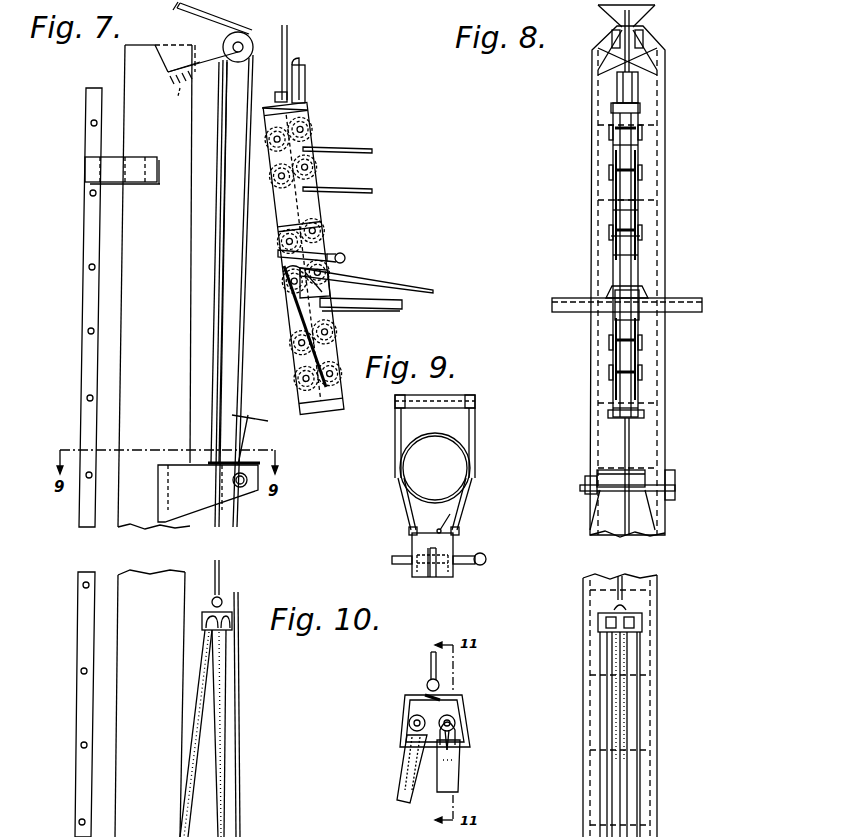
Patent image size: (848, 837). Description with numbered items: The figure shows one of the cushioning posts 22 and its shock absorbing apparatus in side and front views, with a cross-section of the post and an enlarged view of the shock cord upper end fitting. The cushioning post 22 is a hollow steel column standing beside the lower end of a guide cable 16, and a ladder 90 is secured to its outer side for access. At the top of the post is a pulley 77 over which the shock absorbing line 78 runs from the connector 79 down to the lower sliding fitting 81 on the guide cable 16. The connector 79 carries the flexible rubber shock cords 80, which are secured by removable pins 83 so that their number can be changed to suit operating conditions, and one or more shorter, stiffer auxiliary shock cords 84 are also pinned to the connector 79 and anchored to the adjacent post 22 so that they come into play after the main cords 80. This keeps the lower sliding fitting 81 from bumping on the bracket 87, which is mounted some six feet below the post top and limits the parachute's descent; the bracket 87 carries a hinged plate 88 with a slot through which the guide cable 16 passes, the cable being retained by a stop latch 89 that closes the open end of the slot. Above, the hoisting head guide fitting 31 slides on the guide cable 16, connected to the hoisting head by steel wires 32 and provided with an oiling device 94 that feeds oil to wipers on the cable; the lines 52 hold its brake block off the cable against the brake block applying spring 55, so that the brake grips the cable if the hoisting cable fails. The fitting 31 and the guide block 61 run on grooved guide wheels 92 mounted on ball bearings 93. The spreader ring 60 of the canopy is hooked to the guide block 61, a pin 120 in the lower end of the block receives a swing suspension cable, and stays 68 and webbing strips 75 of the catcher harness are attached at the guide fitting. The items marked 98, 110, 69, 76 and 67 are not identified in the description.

In FIG. 7, the cushioning post 22 is at (130, 277).
In FIG. 8, the cushioning post 22 is at (593, 220).
In FIG. 7, the pulley 77 is at (223, 32).
In FIG. 8, the pulley 77 is at (640, 42).
In FIG. 7, the guide strip 98 is at (222, 130).
In FIG. 7, the guide cable 16 is at (287, 33).
In FIG. 8, the guide cable 16 is at (638, 86).
In FIG. 9, the guide cable 16 is at (420, 546).
In FIG. 7, the oiling device 94 is at (305, 75).
In FIG. 8, the oiling device 94 is at (617, 86).
In FIG. 7, the sliding fitting 31 is at (307, 113).
In FIG. 8, the sliding fitting 31 is at (640, 146).
In FIG. 7, the guide wheels 92 is at (278, 175).
In FIG. 8, the guide wheels 92 is at (640, 165).
In FIG. 7, the brake block applying spring 55 is at (262, 110).
In FIG. 8, the brake block applying spring 55 is at (613, 117).
In FIG. 7, the lines 52 is at (360, 149).
In FIG. 7, the steel wires or cables 32 is at (360, 189).
In FIG. 7, the shock absorbing line 78 is at (222, 262).
In FIG. 9, the shock absorbing line 78 is at (445, 522).
In FIG. 10, the shock absorbing line 78 is at (430, 663).
In FIG. 7, the guide block 61 is at (292, 250).
In FIG. 8, the guide block 61 is at (640, 236).
In FIG. 7, the strips of webbing 75 is at (392, 282).
In FIG. 7, the spreader ring 60 is at (404, 309).
In FIG. 10, the spreader ring 60 is at (448, 772).
In FIG. 7, the pin 120 is at (284, 278).
In FIG. 7, the rod 110 is at (311, 352).
In FIG. 7, the lower sliding fitting 81 is at (262, 402).
In FIG. 8, the lower sliding fitting 81 is at (640, 396).
In FIG. 7, the hinged plate 88 is at (245, 465).
In FIG. 8, the hinged plate 88 is at (645, 478).
In FIG. 7, the bracket 87 is at (232, 505).
In FIG. 8, the bracket 87 is at (590, 478).
In FIG. 7, the bolt 69 is at (233, 481).
In FIG. 9, the bolt 69 is at (398, 564).
In FIG. 7, the ladder 90 is at (82, 638).
In FIG. 9, the ladder 90 is at (475, 402).
In FIG. 7, the connector 79 is at (222, 612).
In FIG. 8, the connector 79 is at (642, 620).
In FIG. 10, the connector 79 is at (462, 708).
In FIG. 7, the shock cords 80 is at (218, 733).
In FIG. 8, the shock cords 80 is at (630, 673).
In FIG. 7, the auxiliary shock cords 84 is at (200, 749).
In FIG. 10, the auxiliary shock cords 84 is at (400, 800).
In FIG. 8, the ball bearings 93 is at (640, 180).
In FIG. 8, the rod 76 is at (629, 431).
In FIG. 8, the stop latch 89 is at (585, 492).
In FIG. 9, the bracket 67 is at (410, 514).
In FIG. 9, the stays 68 is at (440, 543).
In FIG. 10, the pins 83 is at (455, 724).